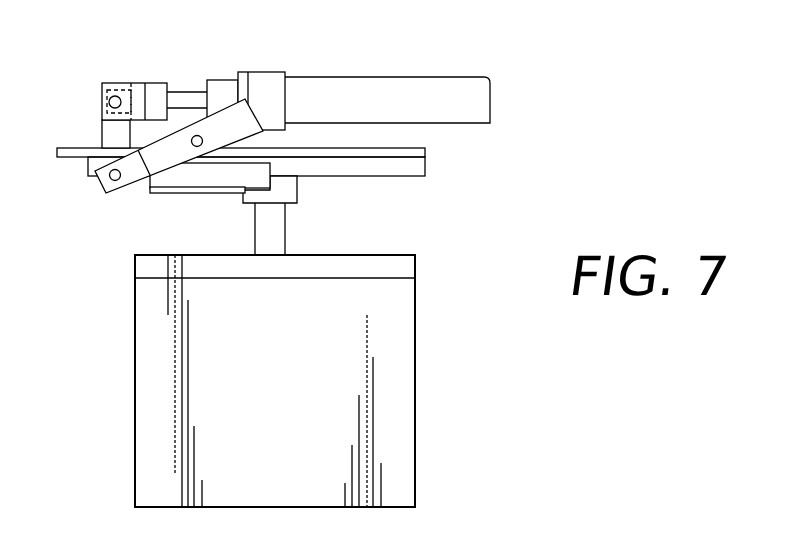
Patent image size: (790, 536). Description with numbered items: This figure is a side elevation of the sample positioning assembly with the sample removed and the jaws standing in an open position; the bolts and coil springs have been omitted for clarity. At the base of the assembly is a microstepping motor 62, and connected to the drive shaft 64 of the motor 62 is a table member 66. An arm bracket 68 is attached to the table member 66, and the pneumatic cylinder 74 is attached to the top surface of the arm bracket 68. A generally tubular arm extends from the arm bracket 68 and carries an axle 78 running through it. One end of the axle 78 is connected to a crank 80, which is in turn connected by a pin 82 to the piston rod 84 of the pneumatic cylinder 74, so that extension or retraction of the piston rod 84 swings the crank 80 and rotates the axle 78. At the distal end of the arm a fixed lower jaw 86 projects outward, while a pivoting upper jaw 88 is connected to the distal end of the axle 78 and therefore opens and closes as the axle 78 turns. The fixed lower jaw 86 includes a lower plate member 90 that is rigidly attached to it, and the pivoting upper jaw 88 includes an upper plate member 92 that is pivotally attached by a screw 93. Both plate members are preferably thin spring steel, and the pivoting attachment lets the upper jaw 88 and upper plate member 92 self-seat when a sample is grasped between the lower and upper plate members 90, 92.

The microstepping motor 62 is at (390, 388).
The drive shaft 64 is at (272, 230).
The table member 66 is at (398, 173).
The arm bracket 68 is at (428, 148).
The pneumatic cylinder 74 is at (478, 97).
The axle 78 is at (97, 183).
The crank 80 is at (105, 128).
The pin 82 is at (113, 101).
The piston rod 84 is at (182, 92).
The fixed lower jaw 86 is at (297, 182).
The pivoting upper jaw 88 is at (252, 104).
The lower plate member 90 is at (200, 195).
The upper plate member 92 is at (178, 170).
The screw 93 is at (212, 117).